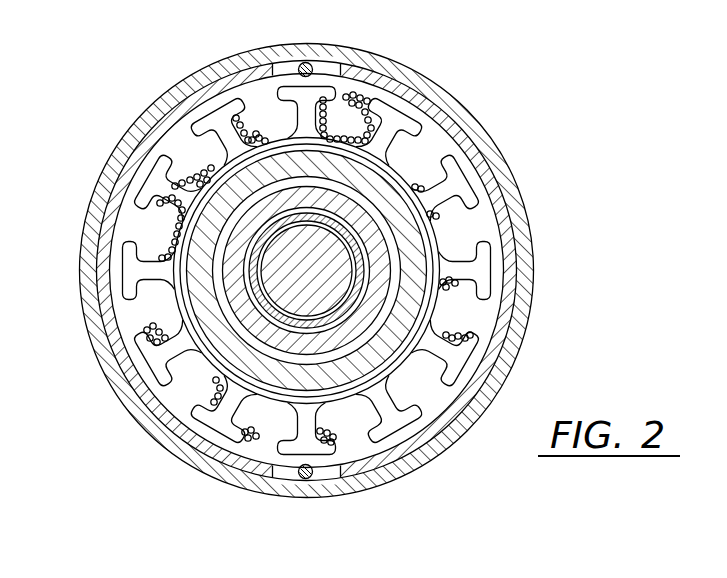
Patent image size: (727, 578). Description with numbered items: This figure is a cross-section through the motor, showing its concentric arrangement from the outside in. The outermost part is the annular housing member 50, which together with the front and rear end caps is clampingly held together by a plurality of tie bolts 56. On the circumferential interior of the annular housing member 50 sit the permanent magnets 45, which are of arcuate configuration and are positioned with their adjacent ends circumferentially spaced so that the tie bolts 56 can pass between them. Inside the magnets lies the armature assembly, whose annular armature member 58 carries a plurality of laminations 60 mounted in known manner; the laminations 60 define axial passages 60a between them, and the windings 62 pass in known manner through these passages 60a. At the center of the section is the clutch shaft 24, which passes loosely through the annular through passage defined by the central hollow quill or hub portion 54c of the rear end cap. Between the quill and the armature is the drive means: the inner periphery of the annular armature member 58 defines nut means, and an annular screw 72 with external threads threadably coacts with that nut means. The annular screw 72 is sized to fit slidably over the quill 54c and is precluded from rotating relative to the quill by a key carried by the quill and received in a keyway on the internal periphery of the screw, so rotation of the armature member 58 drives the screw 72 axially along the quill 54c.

The clutch shaft 24 is at (330, 251).
The permanent magnets 45 is at (170, 115).
The annular housing member 50 is at (470, 114).
The central hollow quill or hub portion 54c is at (361, 269).
The tie bolts 56 is at (306, 62).
The annular armature member 58 is at (384, 289).
The laminations 60 is at (452, 183).
The axial passages 60a is at (160, 317).
The windings 62 is at (348, 98).
The annular screw 72 is at (380, 283).